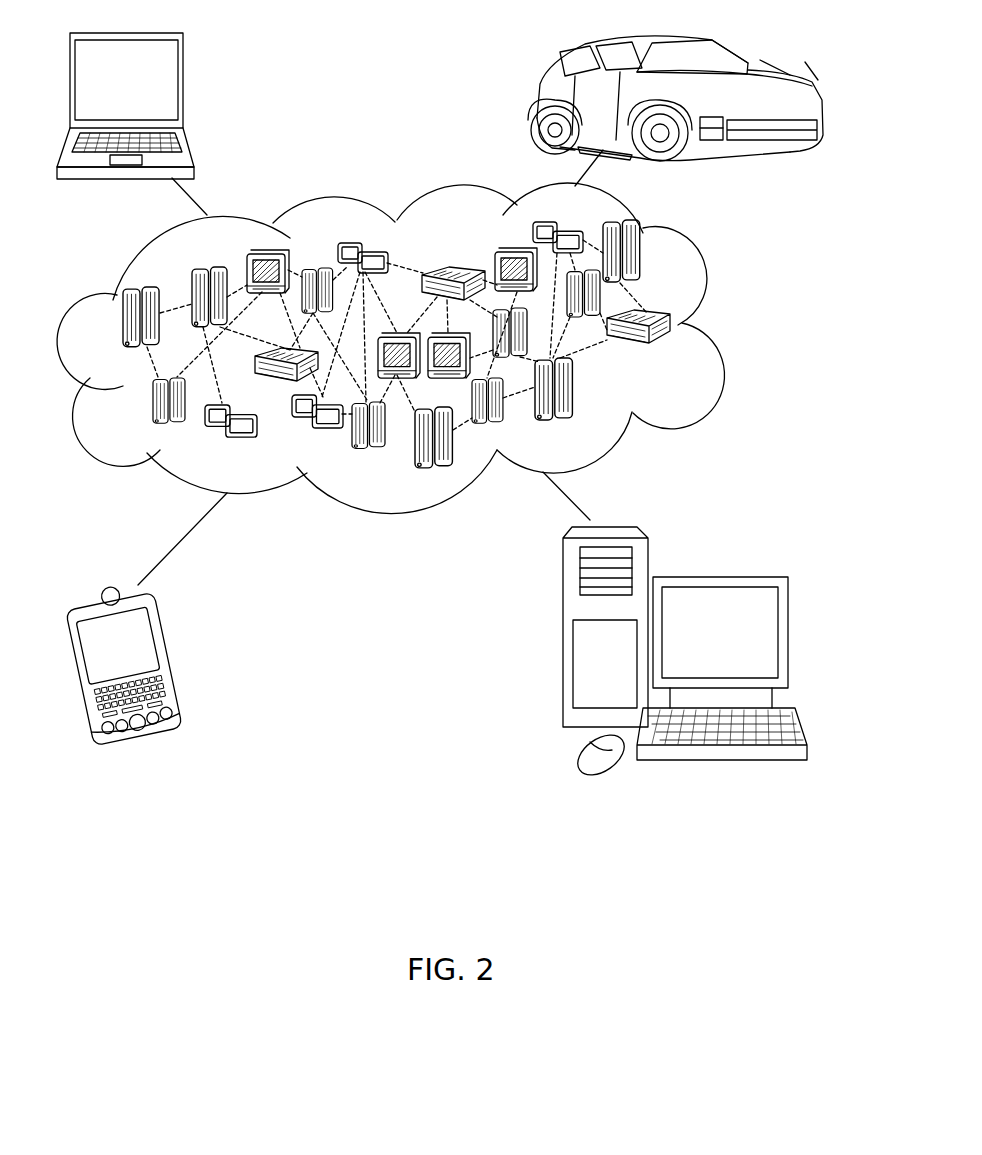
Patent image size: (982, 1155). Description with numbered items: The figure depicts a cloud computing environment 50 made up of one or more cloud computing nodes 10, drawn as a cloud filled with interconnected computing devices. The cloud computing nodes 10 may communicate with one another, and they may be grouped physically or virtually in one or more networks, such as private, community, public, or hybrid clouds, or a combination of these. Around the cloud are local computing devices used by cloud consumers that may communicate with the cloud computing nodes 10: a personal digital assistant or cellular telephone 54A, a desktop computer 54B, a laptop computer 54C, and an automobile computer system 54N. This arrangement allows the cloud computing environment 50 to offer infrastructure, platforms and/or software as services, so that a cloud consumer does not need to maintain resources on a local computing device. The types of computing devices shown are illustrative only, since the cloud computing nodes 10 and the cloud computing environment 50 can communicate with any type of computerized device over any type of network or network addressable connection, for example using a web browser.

The cloud computing node 10 is at (680, 355).
The cloud computing environment 50 is at (717, 325).
The personal digital assistant (PDA) or cellular telephone 54A is at (173, 660).
The desktop computer 54B is at (717, 575).
The laptop computer 54C is at (183, 88).
The automobile computer system 54N is at (540, 102).